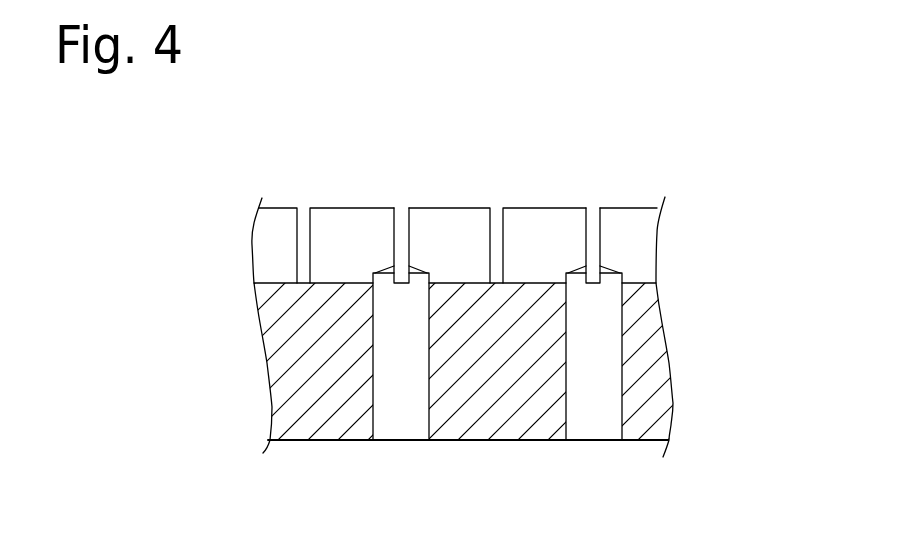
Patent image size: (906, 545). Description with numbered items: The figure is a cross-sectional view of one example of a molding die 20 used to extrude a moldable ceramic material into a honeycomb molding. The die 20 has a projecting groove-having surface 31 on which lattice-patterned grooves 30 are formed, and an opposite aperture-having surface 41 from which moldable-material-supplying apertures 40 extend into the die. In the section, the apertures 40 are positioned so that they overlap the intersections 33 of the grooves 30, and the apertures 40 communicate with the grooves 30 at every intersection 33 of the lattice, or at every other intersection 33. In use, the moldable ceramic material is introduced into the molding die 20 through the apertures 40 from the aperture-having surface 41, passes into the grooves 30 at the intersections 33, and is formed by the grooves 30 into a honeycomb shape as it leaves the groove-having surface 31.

The die 20 is at (273, 178).
The lattice-patterned grooves 30 is at (496, 215).
The groove-having surface 31 is at (557, 208).
The intersections of the grooves 33 is at (402, 211).
The moldable-material-supplying apertures 40 is at (401, 414).
The aperture-having surface 41 is at (507, 441).